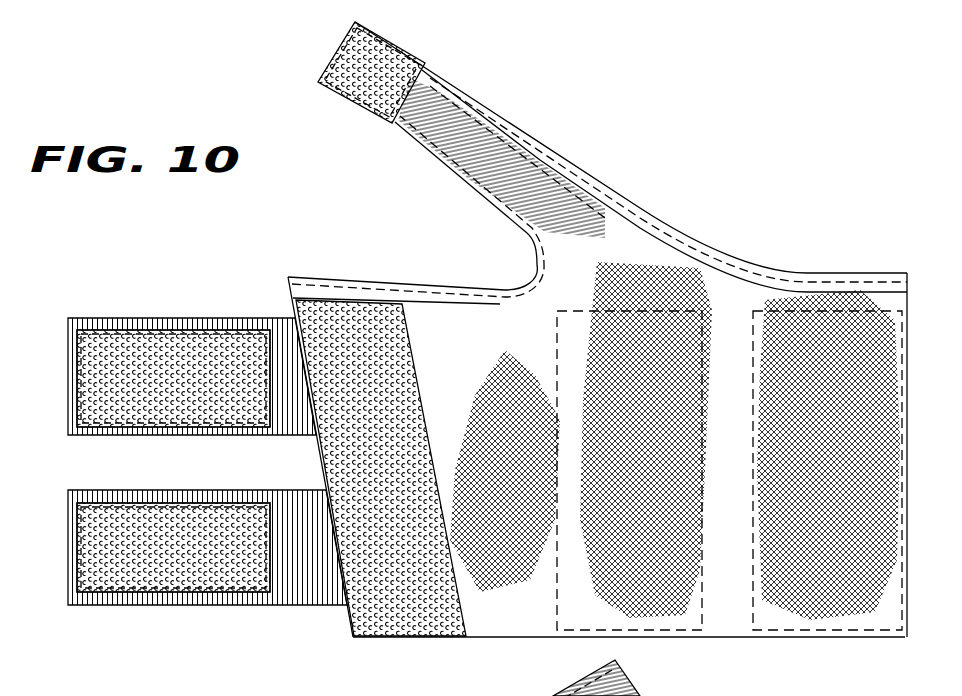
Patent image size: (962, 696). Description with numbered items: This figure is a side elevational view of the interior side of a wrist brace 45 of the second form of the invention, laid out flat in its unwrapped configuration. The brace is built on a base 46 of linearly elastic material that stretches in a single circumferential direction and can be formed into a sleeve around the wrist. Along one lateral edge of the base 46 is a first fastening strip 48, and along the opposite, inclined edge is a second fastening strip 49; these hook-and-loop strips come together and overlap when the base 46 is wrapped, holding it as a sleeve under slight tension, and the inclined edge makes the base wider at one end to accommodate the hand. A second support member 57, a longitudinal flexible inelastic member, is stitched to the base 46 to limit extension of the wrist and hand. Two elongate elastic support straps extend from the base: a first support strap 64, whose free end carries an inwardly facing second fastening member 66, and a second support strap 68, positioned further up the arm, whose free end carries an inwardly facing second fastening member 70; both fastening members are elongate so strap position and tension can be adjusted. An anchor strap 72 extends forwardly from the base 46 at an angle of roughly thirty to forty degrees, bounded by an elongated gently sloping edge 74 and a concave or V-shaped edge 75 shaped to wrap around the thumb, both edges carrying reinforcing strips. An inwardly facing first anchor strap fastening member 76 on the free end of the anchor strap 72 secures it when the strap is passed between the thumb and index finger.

The wrist brace 45 is at (682, 196).
The base 46 is at (728, 618).
The first fastening strip 48 is at (893, 327).
The second fastening strip 49 is at (430, 607).
The second support member 57 is at (663, 630).
The first elongate elastic support strap 64 is at (287, 320).
The second support strap fastening member 66 is at (124, 350).
The second elongate elastic support strap 68 is at (315, 583).
The second fastening member 70 is at (138, 575).
The anchor strap 72 is at (483, 77).
The gently sloping edge 74 is at (533, 133).
The concave edge 75 is at (478, 188).
The first anchor strap fastening member 76 is at (340, 60).